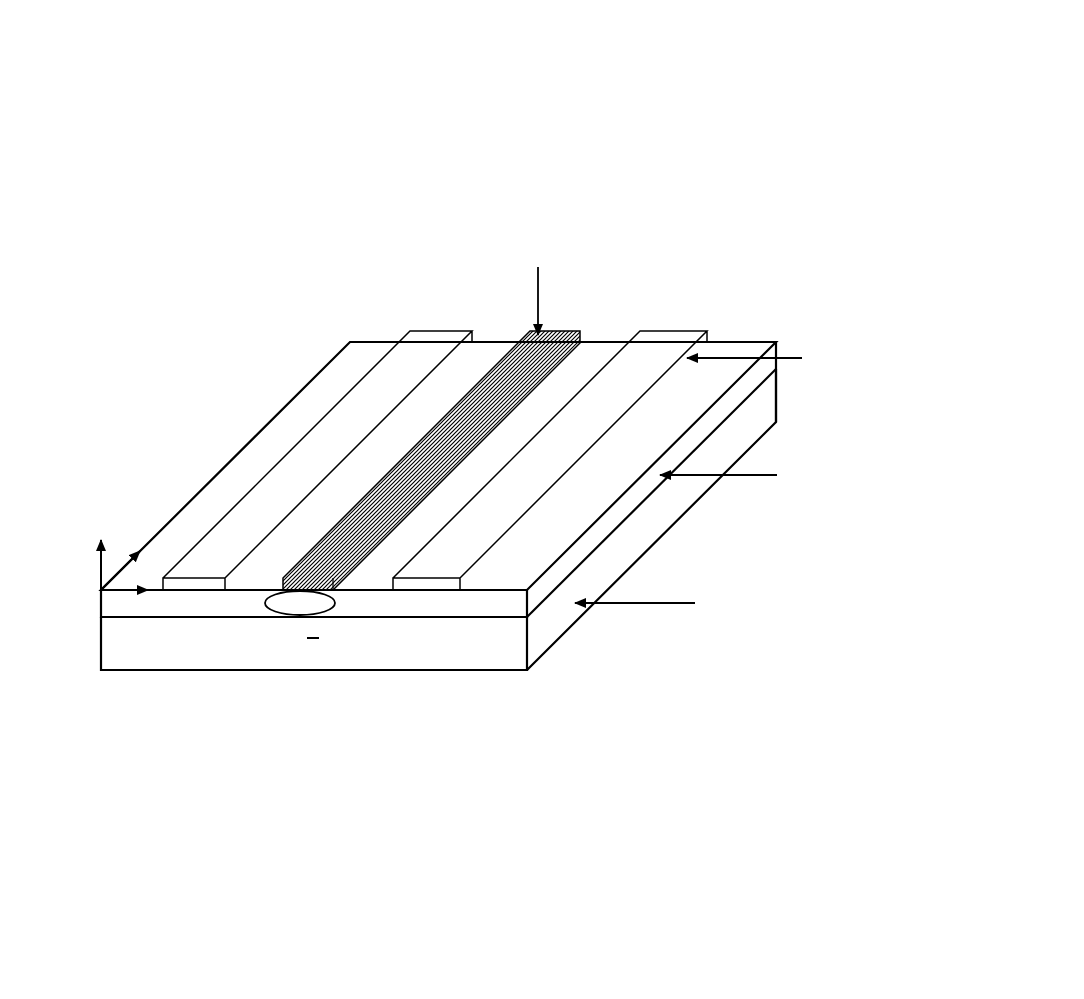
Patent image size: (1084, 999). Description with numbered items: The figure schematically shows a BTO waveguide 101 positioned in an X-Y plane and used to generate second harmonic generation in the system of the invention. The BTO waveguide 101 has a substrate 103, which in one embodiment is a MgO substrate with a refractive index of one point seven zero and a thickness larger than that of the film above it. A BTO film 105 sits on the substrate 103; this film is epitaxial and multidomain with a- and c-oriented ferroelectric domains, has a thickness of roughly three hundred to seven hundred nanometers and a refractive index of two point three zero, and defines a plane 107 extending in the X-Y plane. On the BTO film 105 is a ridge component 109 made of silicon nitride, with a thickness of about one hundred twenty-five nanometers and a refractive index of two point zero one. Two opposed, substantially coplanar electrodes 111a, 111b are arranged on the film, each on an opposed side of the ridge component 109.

The BTO waveguide 101 is at (326, 87).
The substrate 103 is at (552, 622).
The BTO film 105 is at (457, 602).
The plane 107 is at (715, 373).
The ridge component 109 is at (506, 372).
The electrode 111a is at (367, 400).
The electrode 111b is at (652, 353).